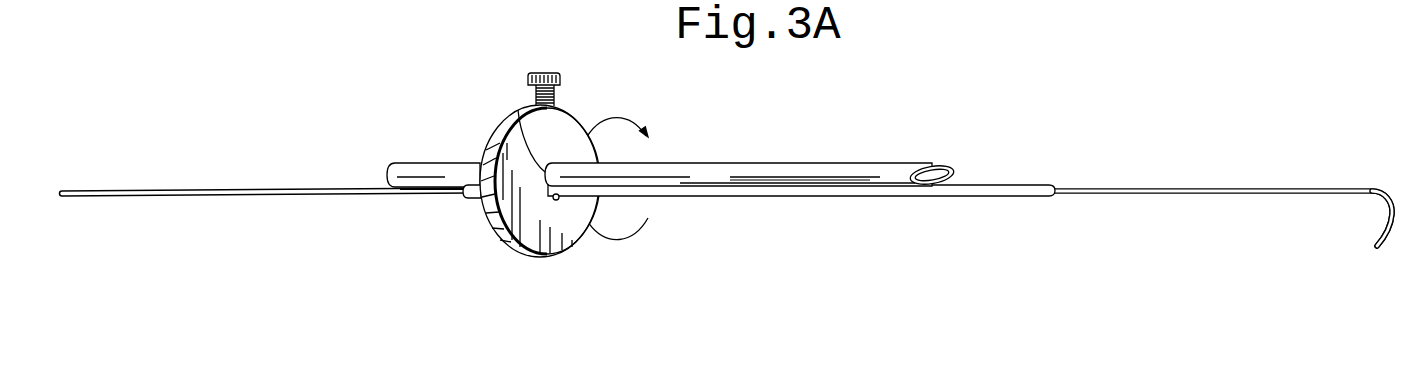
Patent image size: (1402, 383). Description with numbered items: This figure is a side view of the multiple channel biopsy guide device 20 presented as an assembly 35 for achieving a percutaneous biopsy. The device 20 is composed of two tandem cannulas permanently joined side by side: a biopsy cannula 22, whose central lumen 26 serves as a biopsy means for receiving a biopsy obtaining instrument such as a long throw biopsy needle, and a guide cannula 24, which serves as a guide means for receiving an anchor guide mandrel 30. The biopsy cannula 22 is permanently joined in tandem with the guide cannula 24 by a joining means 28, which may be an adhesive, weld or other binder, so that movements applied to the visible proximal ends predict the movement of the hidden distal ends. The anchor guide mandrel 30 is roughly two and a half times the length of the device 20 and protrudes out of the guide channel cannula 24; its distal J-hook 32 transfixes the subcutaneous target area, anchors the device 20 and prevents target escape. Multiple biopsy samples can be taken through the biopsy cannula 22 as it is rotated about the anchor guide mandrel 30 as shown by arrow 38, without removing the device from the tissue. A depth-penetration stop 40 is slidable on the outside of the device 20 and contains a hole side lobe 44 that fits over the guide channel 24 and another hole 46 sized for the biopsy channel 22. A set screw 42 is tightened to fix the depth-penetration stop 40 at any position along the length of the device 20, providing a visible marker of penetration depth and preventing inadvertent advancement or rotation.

The tandem multiple channel biopsy guide device 20 is at (773, 171).
The biopsy cannula 22 is at (805, 163).
The guide cannula 24 is at (990, 198).
The lumen of biopsy cannula 26 is at (926, 171).
The joining means 28 is at (855, 186).
The anchor guide mandrel 30 is at (252, 183).
The distal J-hook 32 is at (1389, 241).
The assembly 35 is at (919, 90).
The arrow 38 is at (644, 118).
The depth-penetration stop 40 is at (560, 163).
The set screw 42 is at (536, 72).
The hole side lobe 44 is at (553, 198).
The hole for biopsy channel 46 is at (521, 110).